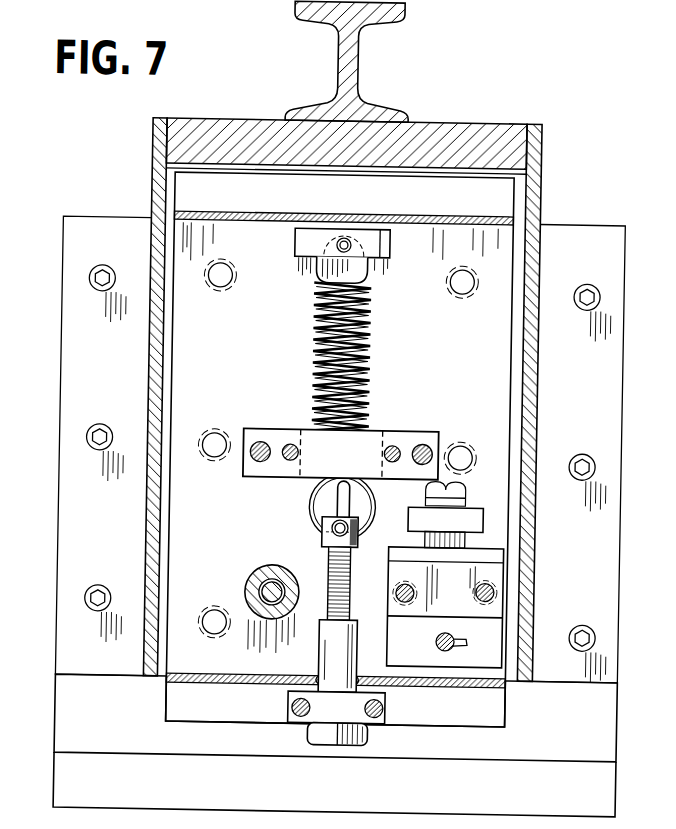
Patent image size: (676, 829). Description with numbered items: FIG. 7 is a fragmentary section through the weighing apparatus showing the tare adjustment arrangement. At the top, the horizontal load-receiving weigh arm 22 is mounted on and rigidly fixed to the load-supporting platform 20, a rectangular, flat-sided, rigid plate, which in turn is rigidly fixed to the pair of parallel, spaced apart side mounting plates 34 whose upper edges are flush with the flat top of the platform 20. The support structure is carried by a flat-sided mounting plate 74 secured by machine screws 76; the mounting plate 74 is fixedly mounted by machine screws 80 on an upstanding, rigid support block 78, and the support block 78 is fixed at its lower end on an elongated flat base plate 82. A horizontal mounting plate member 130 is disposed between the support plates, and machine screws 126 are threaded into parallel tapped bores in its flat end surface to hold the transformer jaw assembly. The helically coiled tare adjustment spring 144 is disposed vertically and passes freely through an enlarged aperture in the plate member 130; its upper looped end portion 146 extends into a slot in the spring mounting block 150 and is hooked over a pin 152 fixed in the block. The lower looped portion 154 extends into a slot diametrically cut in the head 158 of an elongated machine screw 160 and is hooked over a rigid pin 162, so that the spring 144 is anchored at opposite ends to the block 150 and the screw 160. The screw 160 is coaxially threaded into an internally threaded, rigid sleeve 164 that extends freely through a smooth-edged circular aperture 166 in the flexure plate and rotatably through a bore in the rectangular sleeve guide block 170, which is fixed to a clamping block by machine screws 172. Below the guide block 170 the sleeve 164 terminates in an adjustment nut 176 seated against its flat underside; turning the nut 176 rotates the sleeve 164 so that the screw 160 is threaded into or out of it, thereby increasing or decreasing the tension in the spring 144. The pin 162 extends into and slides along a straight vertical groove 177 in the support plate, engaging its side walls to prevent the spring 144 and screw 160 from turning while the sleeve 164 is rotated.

The load-supporting platform 20 is at (460, 126).
The load-receiving weigh arm 22 is at (352, 52).
The side mounting plates 34 is at (147, 158).
The mounting plate 74 is at (621, 502).
The machine screws 76 is at (224, 280).
The support block 78 is at (618, 733).
The machine screws 80 is at (103, 294).
The base plate 82 is at (615, 780).
The machine screws 126 is at (393, 447).
The mounting plate member 130 is at (280, 431).
The tare adjustment spring 144 is at (368, 317).
The looped end portion 146 is at (367, 266).
The spring mounting block 150 is at (389, 246).
The pin 152 is at (341, 240).
The looped portion 154 is at (312, 515).
The head 158 is at (324, 545).
The machine screw 160 is at (355, 562).
The rigid pin 162 is at (358, 525).
The sleeve 164 is at (324, 650).
The aperture 166 is at (328, 680).
The sleeve guide block 170 is at (395, 709).
The machine screws 172 is at (370, 708).
The adjustment nut 176 is at (361, 745).
The vertical groove 177 is at (350, 498).